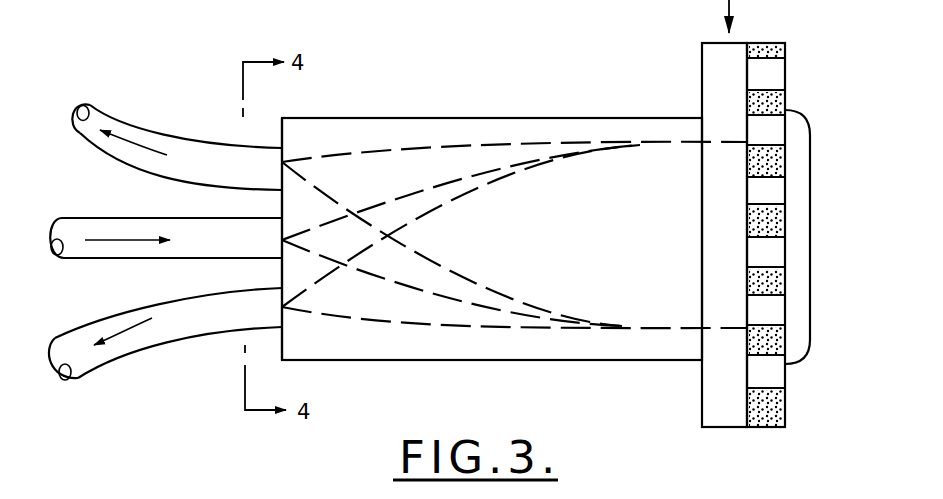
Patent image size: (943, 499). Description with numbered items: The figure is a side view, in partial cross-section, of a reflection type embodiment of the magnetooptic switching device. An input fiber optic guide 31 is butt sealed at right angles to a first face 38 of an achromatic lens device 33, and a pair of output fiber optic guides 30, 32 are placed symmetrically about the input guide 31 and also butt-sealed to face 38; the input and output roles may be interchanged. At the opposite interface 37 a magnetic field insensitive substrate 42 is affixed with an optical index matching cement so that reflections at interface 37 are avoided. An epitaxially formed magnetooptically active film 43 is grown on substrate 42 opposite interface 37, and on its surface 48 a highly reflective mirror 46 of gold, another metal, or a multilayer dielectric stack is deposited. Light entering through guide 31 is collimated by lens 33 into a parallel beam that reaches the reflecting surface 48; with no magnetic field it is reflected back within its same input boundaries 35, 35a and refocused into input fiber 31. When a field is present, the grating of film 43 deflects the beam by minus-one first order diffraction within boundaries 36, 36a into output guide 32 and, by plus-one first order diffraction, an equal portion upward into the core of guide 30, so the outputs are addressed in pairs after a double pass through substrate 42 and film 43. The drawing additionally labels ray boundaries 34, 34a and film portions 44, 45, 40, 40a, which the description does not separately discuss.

The output fiber optic guide 30 is at (148, 132).
The input fiber optic guide 31 is at (114, 217).
The output fiber optic guide 32 is at (113, 308).
The lens device 33 is at (531, 117).
The light path from fiber 30 34 is at (338, 153).
The light path from fiber 30 (reflected) 34a is at (324, 199).
The input boundary 35 is at (513, 167).
The input boundary 35a is at (481, 299).
The beam boundary 36 is at (328, 272).
The beam boundary 36a is at (385, 323).
The interface 37 is at (700, 75).
The first face 38 is at (281, 137).
The transparent window region 40 is at (776, 131).
The transparent window region 40a is at (776, 309).
The magnetic field insensitive substrate 42 is at (712, 43).
The magnetooptically active film 43 is at (766, 428).
The opaque segment 44 is at (776, 101).
The transparent segment 45 is at (776, 193).
The highly reflective mirror 46 is at (803, 233).
The reflecting surface 48 is at (780, 405).